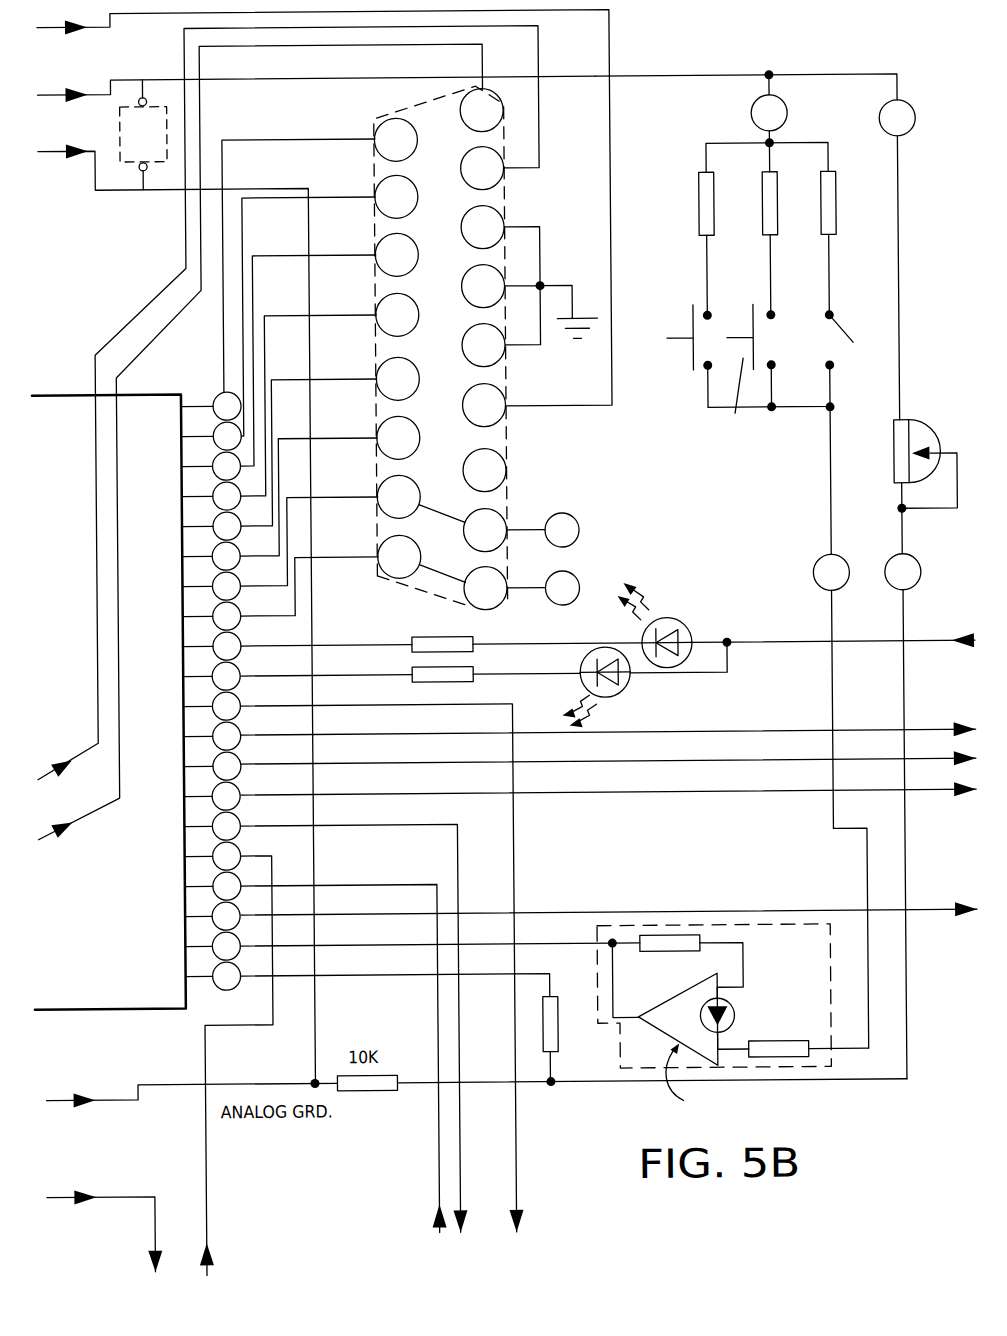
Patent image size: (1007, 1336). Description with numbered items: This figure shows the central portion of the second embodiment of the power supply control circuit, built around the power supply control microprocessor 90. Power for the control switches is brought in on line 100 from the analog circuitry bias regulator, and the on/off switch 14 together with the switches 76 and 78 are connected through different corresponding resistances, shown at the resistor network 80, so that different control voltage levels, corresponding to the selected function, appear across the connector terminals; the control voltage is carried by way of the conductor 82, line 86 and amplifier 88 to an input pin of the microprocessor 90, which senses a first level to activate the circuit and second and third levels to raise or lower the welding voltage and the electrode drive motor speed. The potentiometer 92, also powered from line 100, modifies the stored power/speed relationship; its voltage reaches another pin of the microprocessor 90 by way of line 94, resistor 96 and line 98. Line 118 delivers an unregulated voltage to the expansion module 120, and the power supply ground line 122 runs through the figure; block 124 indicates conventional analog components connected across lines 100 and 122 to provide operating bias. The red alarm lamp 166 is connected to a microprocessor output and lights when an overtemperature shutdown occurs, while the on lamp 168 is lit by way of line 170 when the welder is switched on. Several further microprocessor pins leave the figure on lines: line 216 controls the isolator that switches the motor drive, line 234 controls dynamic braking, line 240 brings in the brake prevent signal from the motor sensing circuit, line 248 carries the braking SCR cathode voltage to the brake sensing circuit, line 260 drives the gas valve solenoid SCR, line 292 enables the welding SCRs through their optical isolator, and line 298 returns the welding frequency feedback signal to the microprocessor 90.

The on/off switch 14 is at (856, 350).
The switch 76 is at (683, 338).
The switch 78 is at (745, 339).
The resistor network 80 is at (787, 124).
The conductor 82 is at (832, 503).
The line 86 is at (831, 813).
The amplifier 88 is at (793, 927).
The power supply control microprocessor 90 is at (94, 1006).
The potentiometer 92 is at (914, 484).
The line 94 is at (904, 621).
The resistor 96 is at (557, 1013).
The line 98 is at (353, 980).
The line 100 is at (674, 76).
The line 118 is at (130, 12).
The expansion module 120 is at (509, 437).
The ground line 122 is at (124, 187).
The block 124 is at (131, 131).
The red alarm lamp 166 is at (674, 614).
The on lamp 168 is at (612, 698).
The line 170 is at (764, 647).
The line 216 is at (201, 1193).
The line 234 is at (457, 1140).
The line 240 is at (433, 1172).
The line 248 is at (101, 1197).
The line 260 is at (516, 1165).
The line 292 is at (547, 795).
The line 298 is at (913, 883).